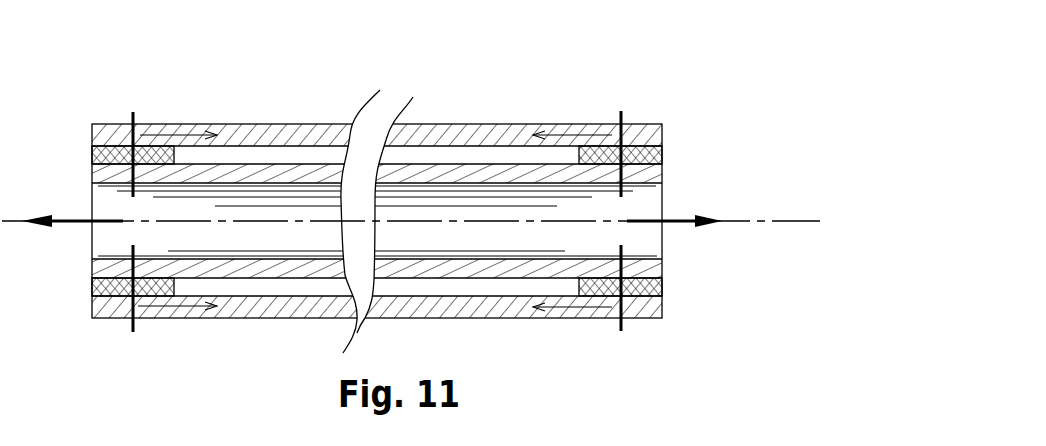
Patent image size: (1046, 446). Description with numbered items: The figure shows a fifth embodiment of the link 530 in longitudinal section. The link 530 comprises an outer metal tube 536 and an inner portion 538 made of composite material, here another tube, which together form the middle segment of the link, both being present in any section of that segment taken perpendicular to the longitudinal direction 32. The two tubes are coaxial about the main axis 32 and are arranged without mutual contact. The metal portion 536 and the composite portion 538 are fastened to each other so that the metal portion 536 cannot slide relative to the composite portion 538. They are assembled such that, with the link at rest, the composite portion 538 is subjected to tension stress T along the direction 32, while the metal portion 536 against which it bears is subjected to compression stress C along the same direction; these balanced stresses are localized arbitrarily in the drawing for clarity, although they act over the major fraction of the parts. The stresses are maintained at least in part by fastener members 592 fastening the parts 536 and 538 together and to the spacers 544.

The link 530 is at (620, 30).
The outer metal tube 536 is at (440, 124).
The inner portion made of composite material 538 is at (648, 177).
The spacers 544 is at (652, 158).
The fastener members 592 is at (131, 116).
The main axis 32 is at (803, 222).
The compression stress C is at (163, 131).
The tension stress T is at (72, 225).